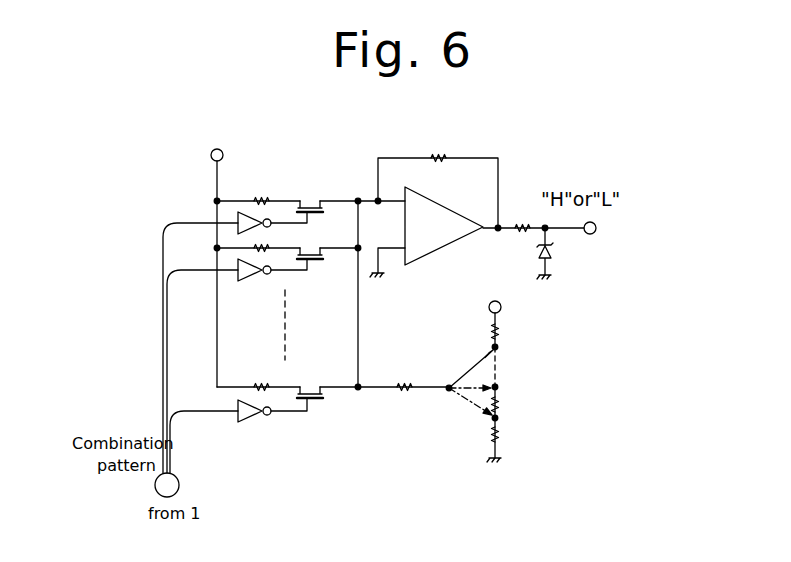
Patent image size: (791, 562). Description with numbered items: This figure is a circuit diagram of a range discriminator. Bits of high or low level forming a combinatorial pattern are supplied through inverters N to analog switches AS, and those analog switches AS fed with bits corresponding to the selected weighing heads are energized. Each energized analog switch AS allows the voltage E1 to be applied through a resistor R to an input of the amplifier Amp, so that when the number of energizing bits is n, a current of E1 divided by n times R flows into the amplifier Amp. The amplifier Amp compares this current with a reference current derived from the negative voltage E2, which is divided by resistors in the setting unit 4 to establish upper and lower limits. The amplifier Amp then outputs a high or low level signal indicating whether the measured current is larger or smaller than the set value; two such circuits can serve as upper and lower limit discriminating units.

The setting unit 4 is at (541, 376).
The voltage E1 is at (217, 252).
The voltage E2 is at (505, 297).
The inverters N is at (242, 207).
The resistors R is at (392, 259).
The analog switches AS is at (307, 200).
The amplifier Amp is at (429, 217).